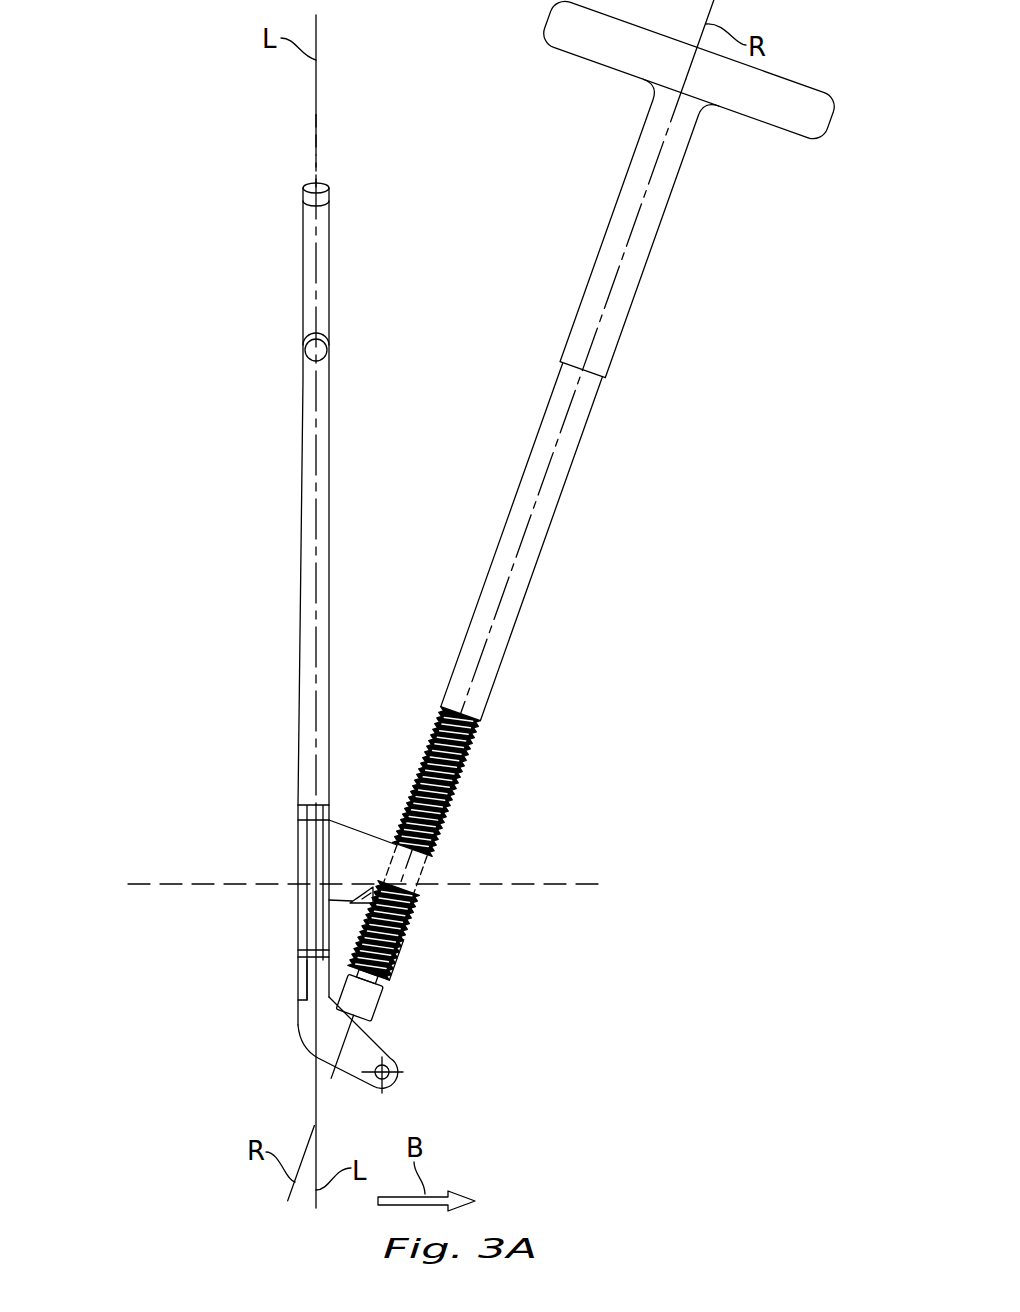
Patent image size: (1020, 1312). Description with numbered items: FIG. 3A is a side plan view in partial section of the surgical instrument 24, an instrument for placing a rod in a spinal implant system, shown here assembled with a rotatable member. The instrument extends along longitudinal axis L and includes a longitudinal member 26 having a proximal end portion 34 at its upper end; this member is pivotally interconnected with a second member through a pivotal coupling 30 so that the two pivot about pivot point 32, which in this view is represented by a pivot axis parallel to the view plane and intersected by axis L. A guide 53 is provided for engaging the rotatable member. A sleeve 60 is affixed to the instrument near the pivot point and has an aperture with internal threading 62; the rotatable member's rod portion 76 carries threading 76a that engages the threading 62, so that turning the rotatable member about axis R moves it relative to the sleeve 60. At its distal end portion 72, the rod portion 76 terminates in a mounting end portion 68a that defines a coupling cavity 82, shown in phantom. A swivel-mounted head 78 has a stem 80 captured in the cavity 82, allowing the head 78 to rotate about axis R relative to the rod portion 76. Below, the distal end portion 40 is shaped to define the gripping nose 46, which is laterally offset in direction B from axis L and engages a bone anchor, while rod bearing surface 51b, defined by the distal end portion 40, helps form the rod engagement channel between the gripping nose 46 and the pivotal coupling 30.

The surgical instrument 24 is at (218, 211).
The proximal end portion 34 is at (303, 187).
The longitudinal member 26 is at (300, 563).
The pivotal coupling 30 is at (300, 875).
The pivot point 32 is at (158, 882).
The guide 53 is at (386, 817).
The rod portion 76 is at (518, 614).
The threading 76a is at (463, 768).
The sleeve 60 is at (430, 864).
The mounting end portion 68a is at (357, 933).
The internal threading 62 is at (415, 910).
The distal end portion 72 is at (405, 932).
The stem 80 is at (400, 963).
The swivel-mounted head 78 is at (385, 976).
The coupling cavity 82 is at (312, 962).
The rod bearing surface 51b is at (322, 998).
The gripping nose 46 is at (372, 1040).
The distal end portion 40 is at (386, 1090).